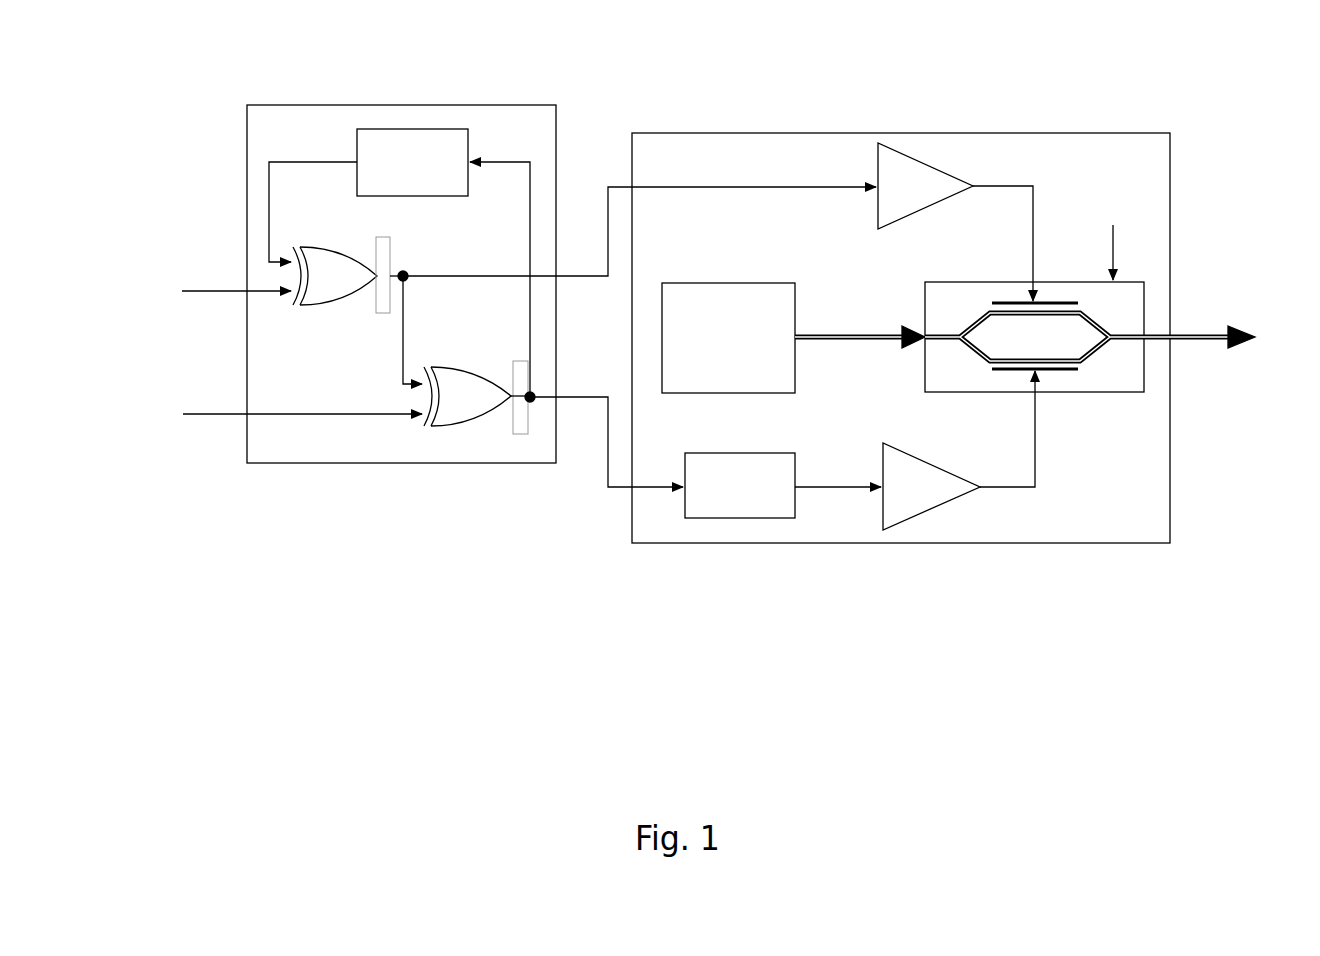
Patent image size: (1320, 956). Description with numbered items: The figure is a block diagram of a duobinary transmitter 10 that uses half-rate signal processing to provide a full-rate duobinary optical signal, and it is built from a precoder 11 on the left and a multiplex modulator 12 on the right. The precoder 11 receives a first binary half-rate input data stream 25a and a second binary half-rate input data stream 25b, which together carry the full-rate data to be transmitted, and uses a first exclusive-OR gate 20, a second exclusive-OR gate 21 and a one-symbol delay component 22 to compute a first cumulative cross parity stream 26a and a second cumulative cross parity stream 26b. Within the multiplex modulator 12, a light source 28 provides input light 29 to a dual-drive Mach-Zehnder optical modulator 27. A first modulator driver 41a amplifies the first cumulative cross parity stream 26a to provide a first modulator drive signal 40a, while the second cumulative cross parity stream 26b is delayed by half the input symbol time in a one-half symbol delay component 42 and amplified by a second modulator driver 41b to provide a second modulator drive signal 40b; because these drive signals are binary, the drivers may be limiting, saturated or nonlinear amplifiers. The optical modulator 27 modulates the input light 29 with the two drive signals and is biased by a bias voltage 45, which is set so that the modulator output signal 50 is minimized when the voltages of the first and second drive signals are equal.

The duobinary transmitter 10 is at (1212, 632).
The precoder 11 is at (522, 105).
The multiplex modulator 12 is at (725, 133).
The first exclusive-OR gate 20 is at (317, 303).
The second exclusive-OR gate 21 is at (460, 423).
The one-symbol delay component 22 is at (375, 129).
The first binary half-rate input data stream 25a is at (232, 292).
The second binary half-rate input data stream 25b is at (210, 415).
The first cumulative cross parity stream 26a is at (608, 188).
The second cumulative cross parity stream 26b is at (608, 487).
The dual-drive Mach-Zehnder optical modulator 27 is at (1092, 392).
The light source 28 is at (662, 342).
The input light 29 is at (853, 340).
The first modulator drive signal 40a is at (1042, 186).
The second modulator drive signal 40b is at (1037, 487).
The first modulator driver 41a is at (895, 148).
The second modulator driver 41b is at (900, 527).
The one-half symbol delay component 42 is at (683, 518).
The bias voltage 45 is at (1113, 245).
The modulator output signal 50 is at (1202, 330).